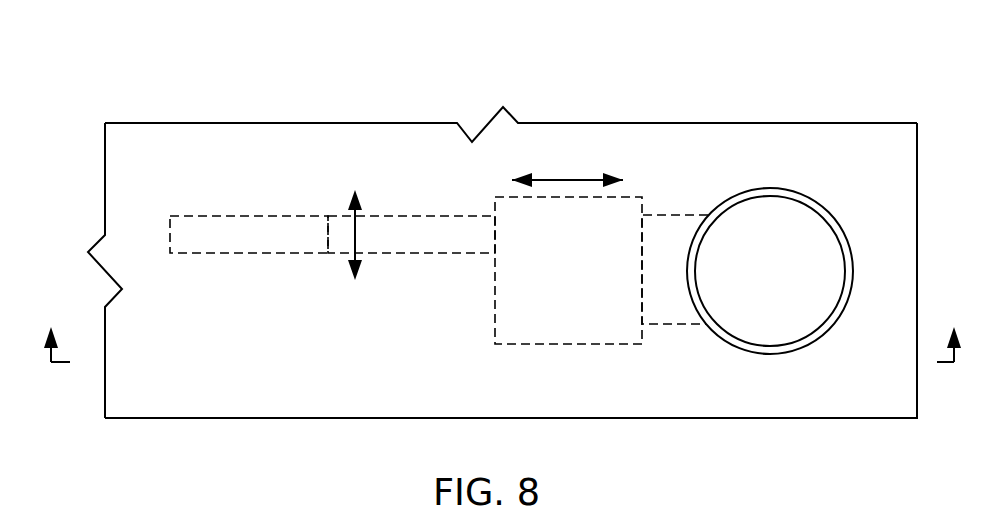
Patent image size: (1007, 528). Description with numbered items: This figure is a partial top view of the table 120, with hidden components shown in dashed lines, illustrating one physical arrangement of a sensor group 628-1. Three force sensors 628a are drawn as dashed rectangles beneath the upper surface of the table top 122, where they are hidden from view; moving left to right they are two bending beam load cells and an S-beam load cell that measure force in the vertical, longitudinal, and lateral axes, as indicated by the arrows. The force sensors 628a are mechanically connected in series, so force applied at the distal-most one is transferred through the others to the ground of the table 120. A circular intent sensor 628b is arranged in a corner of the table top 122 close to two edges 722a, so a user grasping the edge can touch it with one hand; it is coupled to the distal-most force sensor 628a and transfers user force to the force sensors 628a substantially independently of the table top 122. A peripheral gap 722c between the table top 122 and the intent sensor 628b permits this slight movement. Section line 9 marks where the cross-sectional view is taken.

The table 120 is at (810, 47).
The table top 122 is at (568, 160).
The force sensor 628a is at (277, 246).
The intent sensor 628b is at (795, 284).
The sensor group 628-1 is at (748, 147).
The edge 722a is at (915, 381).
The gap 722c is at (730, 202).
The section line 9- 9 is at (502, 328).